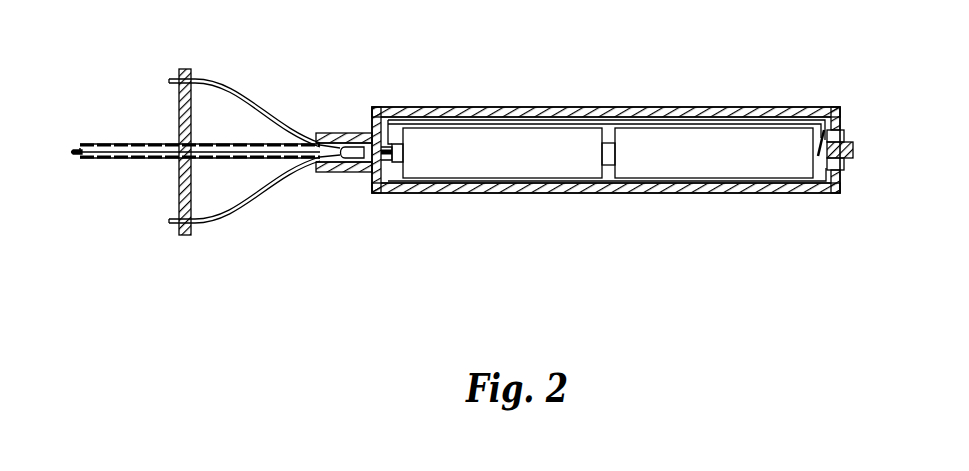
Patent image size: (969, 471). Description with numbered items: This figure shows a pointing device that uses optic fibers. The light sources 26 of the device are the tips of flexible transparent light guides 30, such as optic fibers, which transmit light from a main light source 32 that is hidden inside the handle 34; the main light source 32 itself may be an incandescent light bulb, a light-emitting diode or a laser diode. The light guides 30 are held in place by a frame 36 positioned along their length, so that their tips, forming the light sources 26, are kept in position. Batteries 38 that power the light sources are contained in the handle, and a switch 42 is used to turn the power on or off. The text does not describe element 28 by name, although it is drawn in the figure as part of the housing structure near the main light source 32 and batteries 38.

The light sources 26 is at (80, 148).
The housing 28 is at (378, 190).
The flexible transparent light guides 30 is at (220, 90).
The main light source 32 is at (364, 172).
The handle 34 is at (762, 191).
The frame 36 is at (178, 116).
The batteries 38 is at (690, 135).
The switch 42 is at (847, 145).